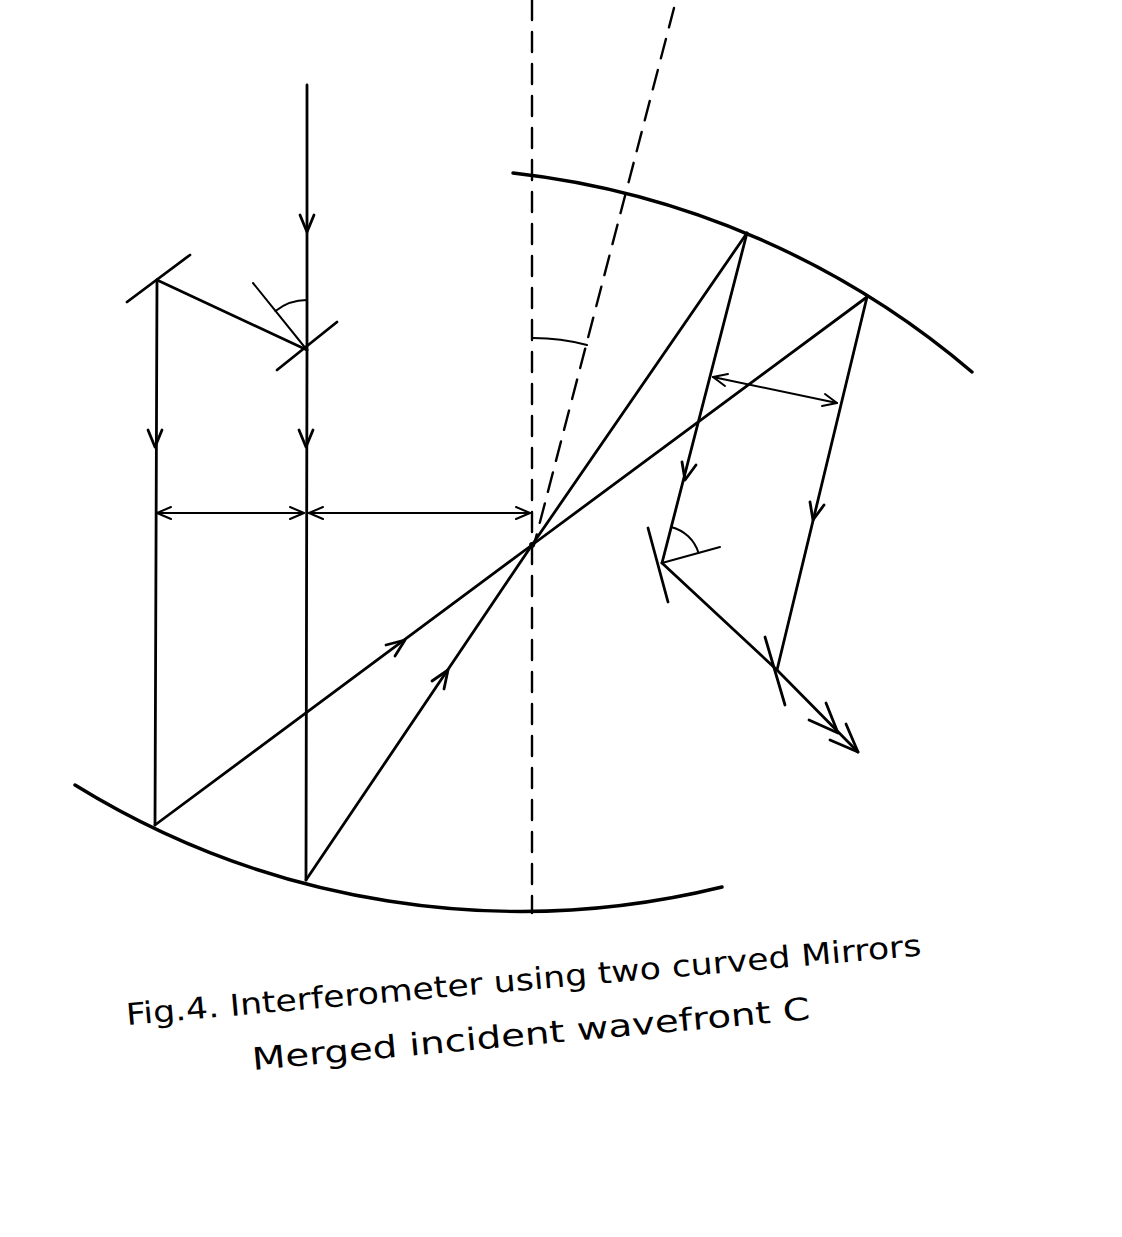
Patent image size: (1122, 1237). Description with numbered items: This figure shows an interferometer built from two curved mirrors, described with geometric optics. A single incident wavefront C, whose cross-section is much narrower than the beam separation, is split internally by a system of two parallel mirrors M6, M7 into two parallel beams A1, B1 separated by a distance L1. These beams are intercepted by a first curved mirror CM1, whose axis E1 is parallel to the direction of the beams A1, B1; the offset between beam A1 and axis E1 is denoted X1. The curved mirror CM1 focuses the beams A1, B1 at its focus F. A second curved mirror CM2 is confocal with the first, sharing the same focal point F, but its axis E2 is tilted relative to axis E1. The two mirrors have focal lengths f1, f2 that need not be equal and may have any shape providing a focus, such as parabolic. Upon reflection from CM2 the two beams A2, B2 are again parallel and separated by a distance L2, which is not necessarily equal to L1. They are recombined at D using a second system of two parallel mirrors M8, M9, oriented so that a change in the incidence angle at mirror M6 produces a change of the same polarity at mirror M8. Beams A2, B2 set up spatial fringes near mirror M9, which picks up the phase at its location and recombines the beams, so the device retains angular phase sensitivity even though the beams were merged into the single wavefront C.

The incident wavefront C is at (315, 200).
The axis of curved mirror CM1 E1 is at (553, 456).
The axis of curved mirror CM2 E2 is at (624, 276).
The first curved mirror CM1 is at (398, 873).
The second curved mirror CM2 is at (742, 272).
The mirror M6 is at (271, 325).
The mirror M7 is at (176, 268).
The mirror M8 is at (652, 580).
The mirror M9 is at (779, 696).
The first beam A1 is at (319, 615).
The second beam B1 is at (169, 552).
The first reflected beam A2 is at (704, 398).
The second reflected beam B2 is at (825, 483).
The beam separation distance L1 is at (230, 500).
The beam separation distance L2 is at (775, 389).
The offset between beam A1 and axis E1 X1 is at (419, 500).
The focus F is at (543, 560).
The focal length of CM1 f1 is at (504, 734).
The focal length of CM2 f2 is at (603, 366).
The recombination point D is at (775, 657).